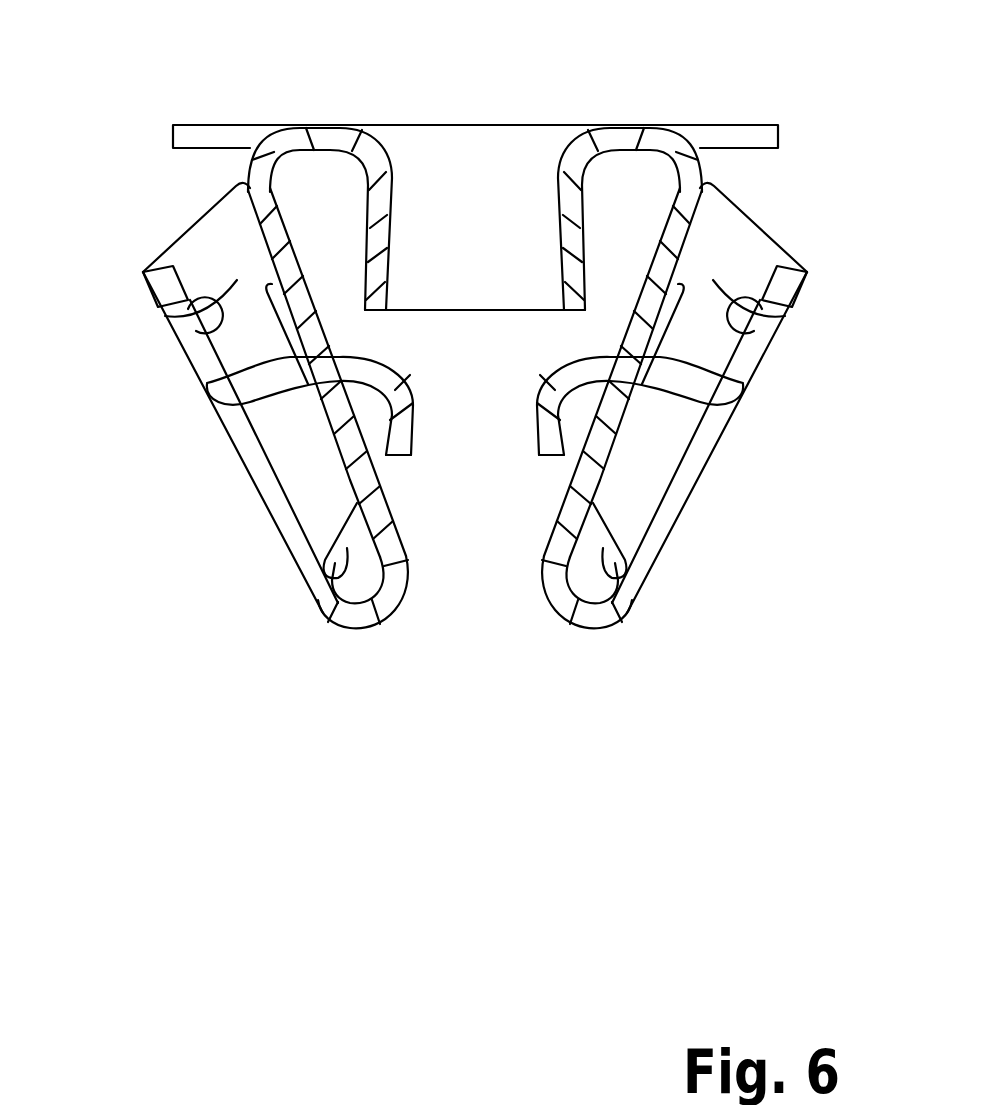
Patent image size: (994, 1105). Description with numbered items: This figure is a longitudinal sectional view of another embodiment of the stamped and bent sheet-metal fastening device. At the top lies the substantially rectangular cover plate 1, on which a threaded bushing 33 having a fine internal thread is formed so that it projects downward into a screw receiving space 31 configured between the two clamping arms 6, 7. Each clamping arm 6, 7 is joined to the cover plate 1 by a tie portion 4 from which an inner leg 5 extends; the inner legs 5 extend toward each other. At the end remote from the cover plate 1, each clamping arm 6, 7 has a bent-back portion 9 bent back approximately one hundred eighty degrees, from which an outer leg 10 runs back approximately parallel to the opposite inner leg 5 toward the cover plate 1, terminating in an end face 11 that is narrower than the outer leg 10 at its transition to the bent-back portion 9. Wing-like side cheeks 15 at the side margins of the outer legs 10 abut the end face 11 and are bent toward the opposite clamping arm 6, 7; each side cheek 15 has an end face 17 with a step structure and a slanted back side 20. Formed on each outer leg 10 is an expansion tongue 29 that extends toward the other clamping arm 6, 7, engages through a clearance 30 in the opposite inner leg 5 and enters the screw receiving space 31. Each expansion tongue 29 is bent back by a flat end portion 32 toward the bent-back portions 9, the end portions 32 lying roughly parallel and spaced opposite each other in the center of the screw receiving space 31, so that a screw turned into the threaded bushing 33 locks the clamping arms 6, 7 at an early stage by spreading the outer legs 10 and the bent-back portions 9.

The cover plate 1 is at (220, 137).
The tie portion 4 is at (265, 142).
The inner leg 5 is at (363, 480).
The clamping arm 6 is at (645, 615).
The clamping arm 7 is at (288, 589).
The bent-back portion 9 is at (380, 610).
The outer leg 10 is at (247, 447).
The end face 11 is at (150, 266).
The side cheek 15 is at (165, 316).
The end face 17 is at (193, 222).
The slanted back side 20 is at (340, 560).
The expansion tongue 29 is at (303, 380).
The clearance 30 is at (350, 440).
The screw receiving space 31 is at (497, 370).
The flat end portion 32 is at (403, 428).
The threaded bushing 33 is at (387, 208).